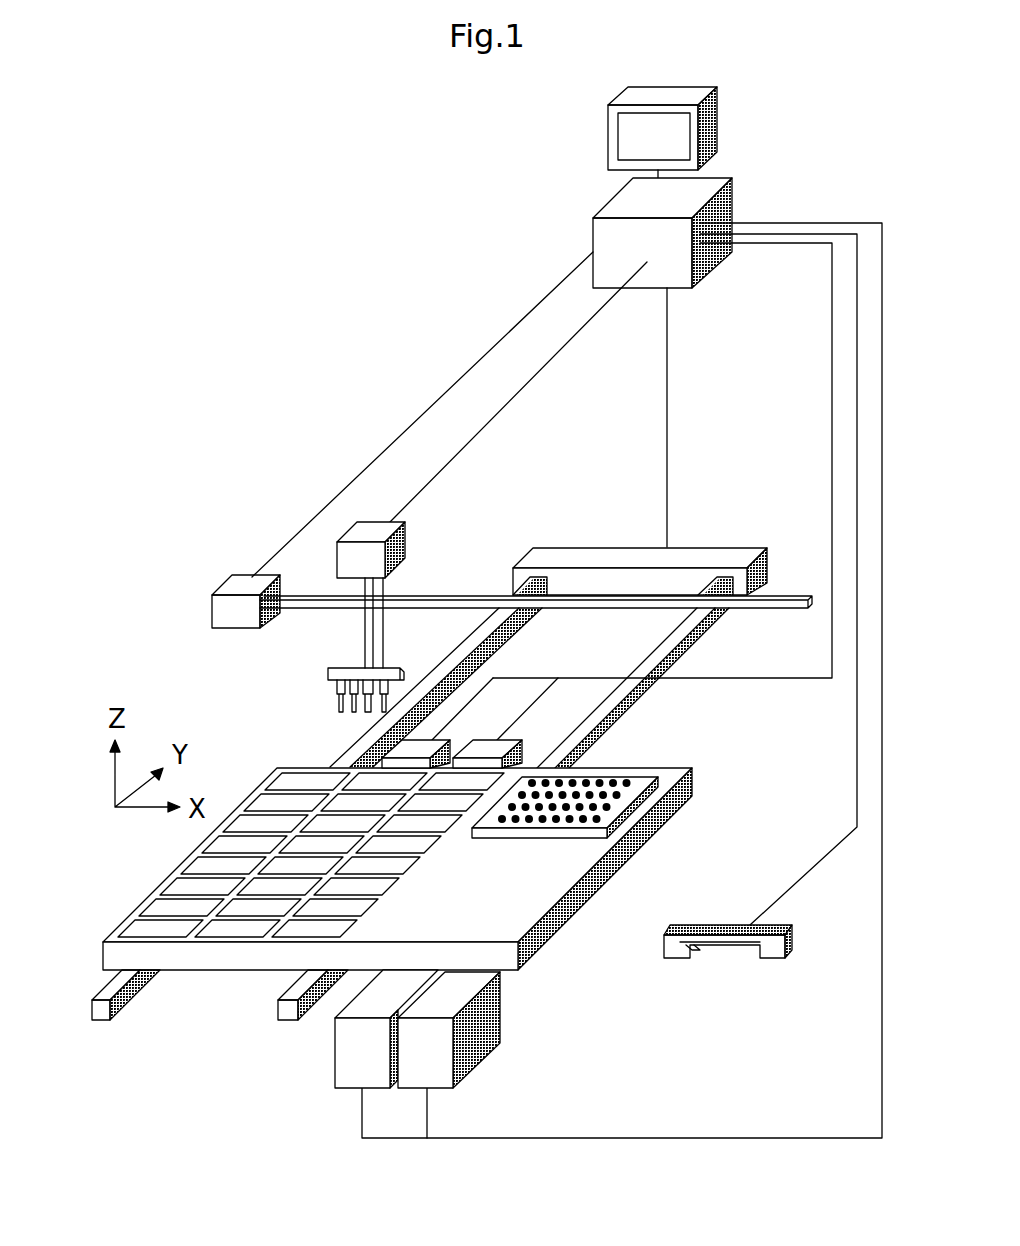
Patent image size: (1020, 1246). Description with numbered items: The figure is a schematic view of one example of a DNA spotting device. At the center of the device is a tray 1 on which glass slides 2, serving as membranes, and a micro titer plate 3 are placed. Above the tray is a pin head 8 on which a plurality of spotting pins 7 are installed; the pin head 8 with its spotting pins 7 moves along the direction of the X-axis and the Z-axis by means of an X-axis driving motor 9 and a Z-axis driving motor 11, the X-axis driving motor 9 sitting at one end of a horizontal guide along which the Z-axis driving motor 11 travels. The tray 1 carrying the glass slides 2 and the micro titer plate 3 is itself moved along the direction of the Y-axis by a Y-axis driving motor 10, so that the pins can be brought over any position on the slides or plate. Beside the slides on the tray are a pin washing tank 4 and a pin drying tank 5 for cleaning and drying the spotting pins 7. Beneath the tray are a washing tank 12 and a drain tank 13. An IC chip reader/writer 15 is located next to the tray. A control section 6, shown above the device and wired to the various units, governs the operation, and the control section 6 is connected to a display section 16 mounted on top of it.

The tray 1 is at (230, 950).
The glass slides 2 is at (293, 783).
The micro titer plate 3 is at (637, 778).
The pin washing tank 4 is at (450, 737).
The pin drying tank 5 is at (505, 747).
The control section 6 is at (723, 197).
The spotting pins 7 is at (340, 700).
The pin head 8 is at (340, 667).
The X-axis driving motor 9 is at (223, 588).
The Y-axis driving motor 10 is at (705, 553).
The Z-axis driving motor 11 is at (400, 545).
The washing tank 12 is at (338, 1053).
The drain tank 13 is at (480, 1050).
The IC chip reader/writer 15 is at (720, 925).
The display section 16 is at (712, 117).